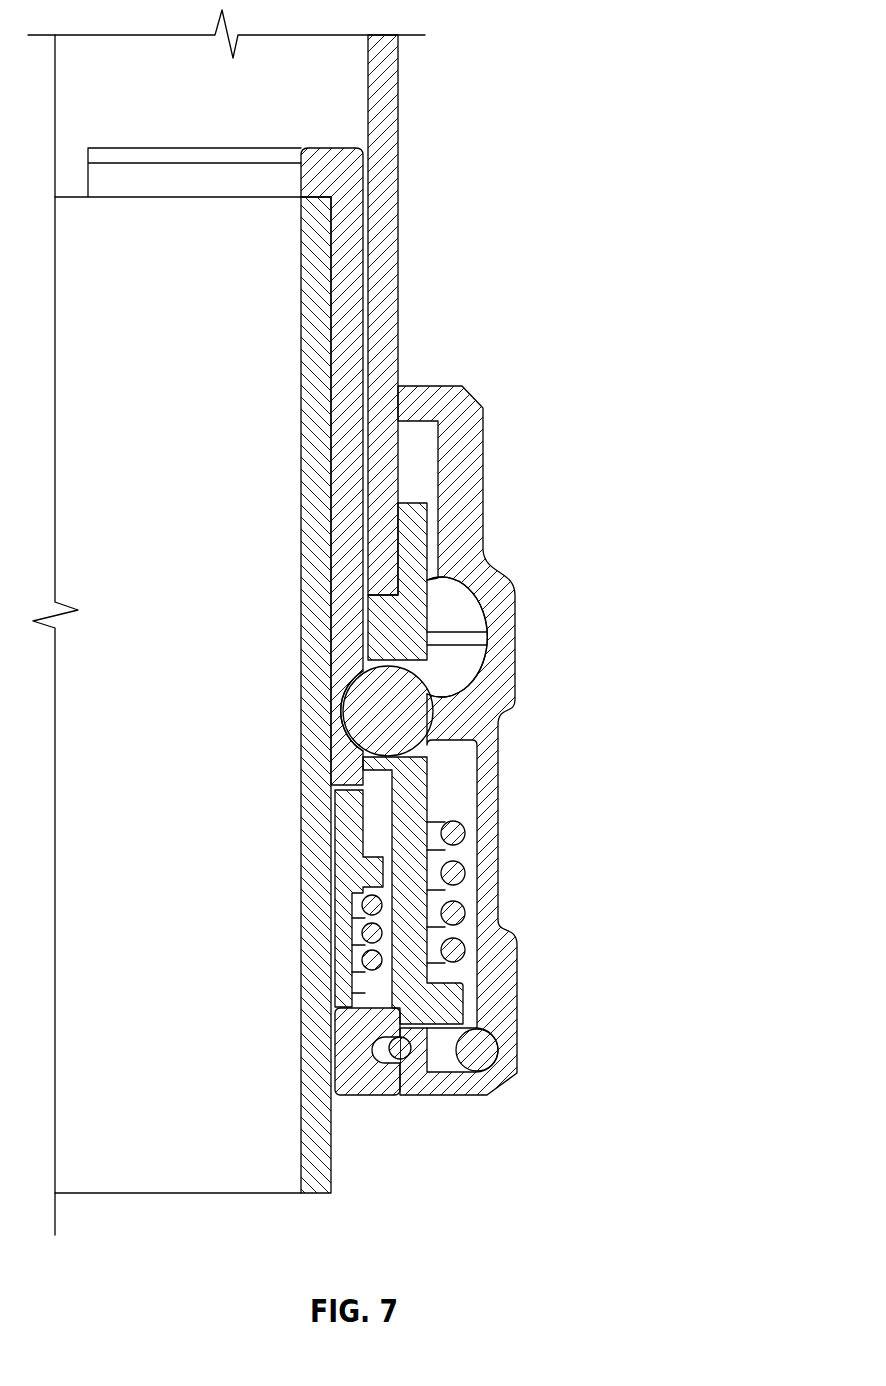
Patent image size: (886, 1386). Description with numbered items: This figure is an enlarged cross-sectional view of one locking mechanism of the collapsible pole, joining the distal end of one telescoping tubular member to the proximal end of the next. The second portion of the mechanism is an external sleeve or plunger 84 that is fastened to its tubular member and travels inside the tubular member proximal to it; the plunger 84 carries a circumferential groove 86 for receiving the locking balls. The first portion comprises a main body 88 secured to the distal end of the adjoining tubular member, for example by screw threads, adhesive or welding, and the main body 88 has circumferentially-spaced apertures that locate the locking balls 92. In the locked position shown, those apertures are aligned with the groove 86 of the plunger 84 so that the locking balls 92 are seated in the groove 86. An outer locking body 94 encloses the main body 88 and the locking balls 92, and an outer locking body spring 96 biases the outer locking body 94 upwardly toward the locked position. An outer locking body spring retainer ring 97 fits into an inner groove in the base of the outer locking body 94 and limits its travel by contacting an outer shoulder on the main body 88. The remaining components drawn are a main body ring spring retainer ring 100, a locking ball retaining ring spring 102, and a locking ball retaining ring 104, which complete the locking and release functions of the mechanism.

The plunger 84 is at (363, 248).
The circumferential groove 86 is at (343, 707).
The main body 88 is at (427, 597).
The locking balls 92 is at (392, 692).
The outer locking body 94 is at (483, 447).
The outer locking body spring 96 is at (462, 912).
The outer locking body spring retainer ring 97 is at (500, 1032).
The main body ring spring retainer ring 100 is at (403, 1060).
The locking ball retaining ring spring 102 is at (372, 902).
The locking ball retaining ring 104 is at (365, 810).